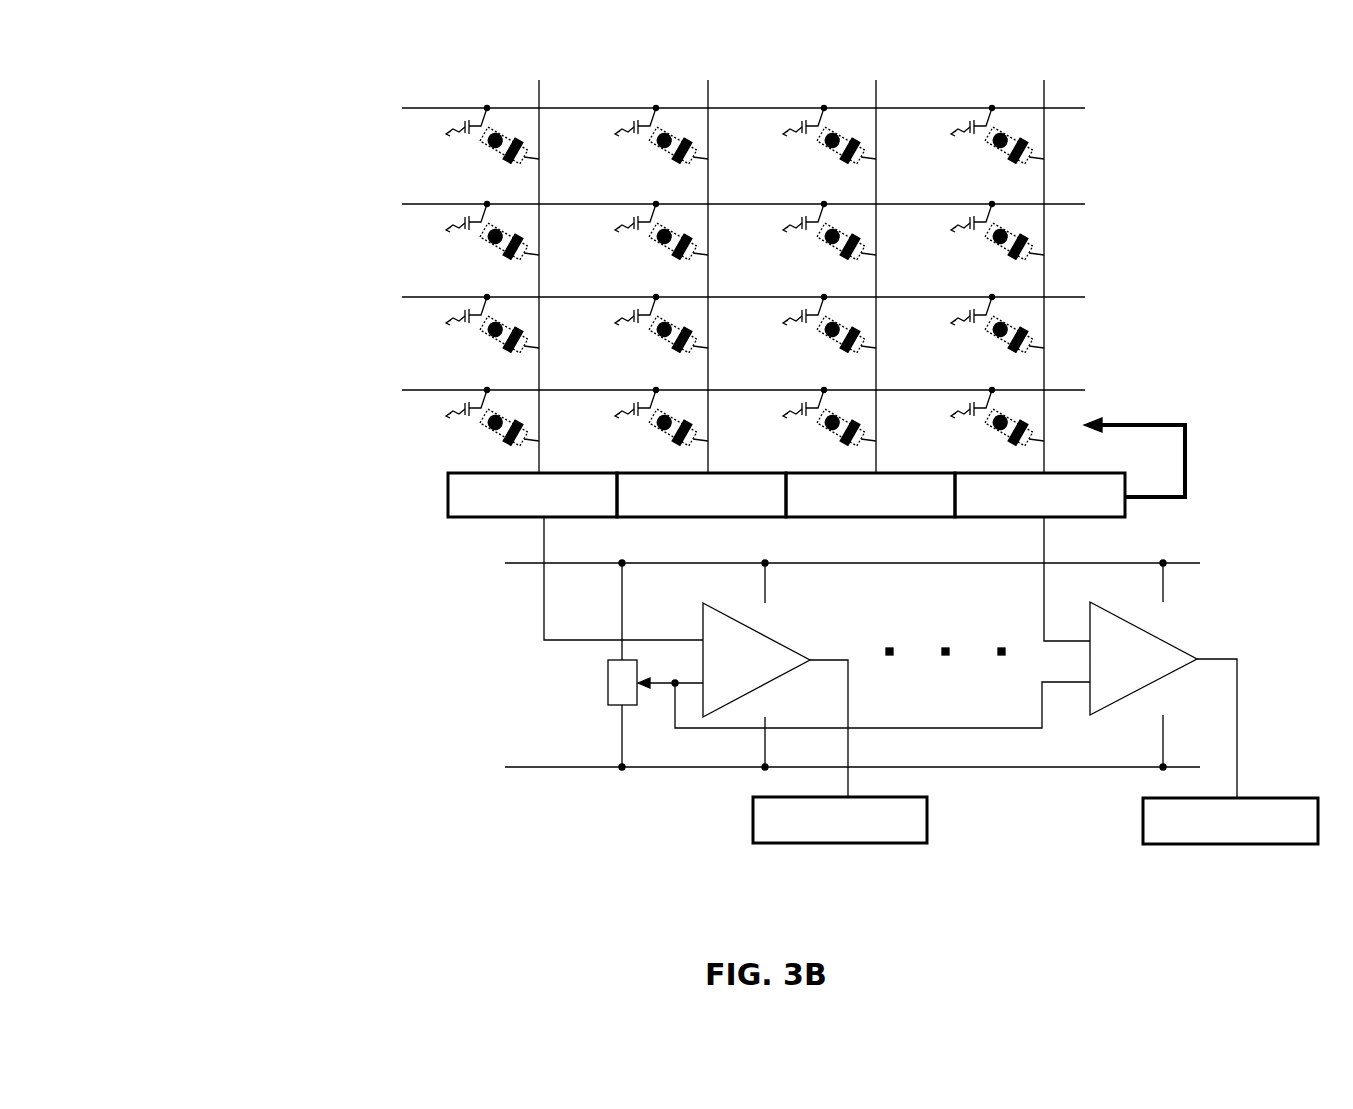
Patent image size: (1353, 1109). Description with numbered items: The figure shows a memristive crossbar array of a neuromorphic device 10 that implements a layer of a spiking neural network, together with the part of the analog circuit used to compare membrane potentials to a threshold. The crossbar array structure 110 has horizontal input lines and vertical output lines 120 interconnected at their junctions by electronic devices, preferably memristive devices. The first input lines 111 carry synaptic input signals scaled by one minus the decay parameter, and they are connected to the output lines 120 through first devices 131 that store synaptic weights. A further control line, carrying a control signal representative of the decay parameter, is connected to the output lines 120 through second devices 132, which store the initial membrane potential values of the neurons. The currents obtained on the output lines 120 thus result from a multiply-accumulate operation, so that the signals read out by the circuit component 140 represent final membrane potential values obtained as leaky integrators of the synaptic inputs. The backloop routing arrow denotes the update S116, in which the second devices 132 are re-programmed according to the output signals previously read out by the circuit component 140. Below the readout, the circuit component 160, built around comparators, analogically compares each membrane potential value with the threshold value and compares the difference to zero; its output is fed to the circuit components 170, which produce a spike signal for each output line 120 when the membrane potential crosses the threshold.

The neuromorphic device 10 is at (310, 820).
The crossbar array structure 110 is at (1130, 455).
The first input lines 111 is at (563, 106).
The output lines 120 is at (543, 278).
The first devices 131 is at (848, 128).
The second devices 132 is at (541, 388).
The updating step S116 is at (1172, 422).
The circuit component 140 is at (446, 495).
The circuit component 160 is at (455, 560).
The circuit components 170 is at (752, 818).